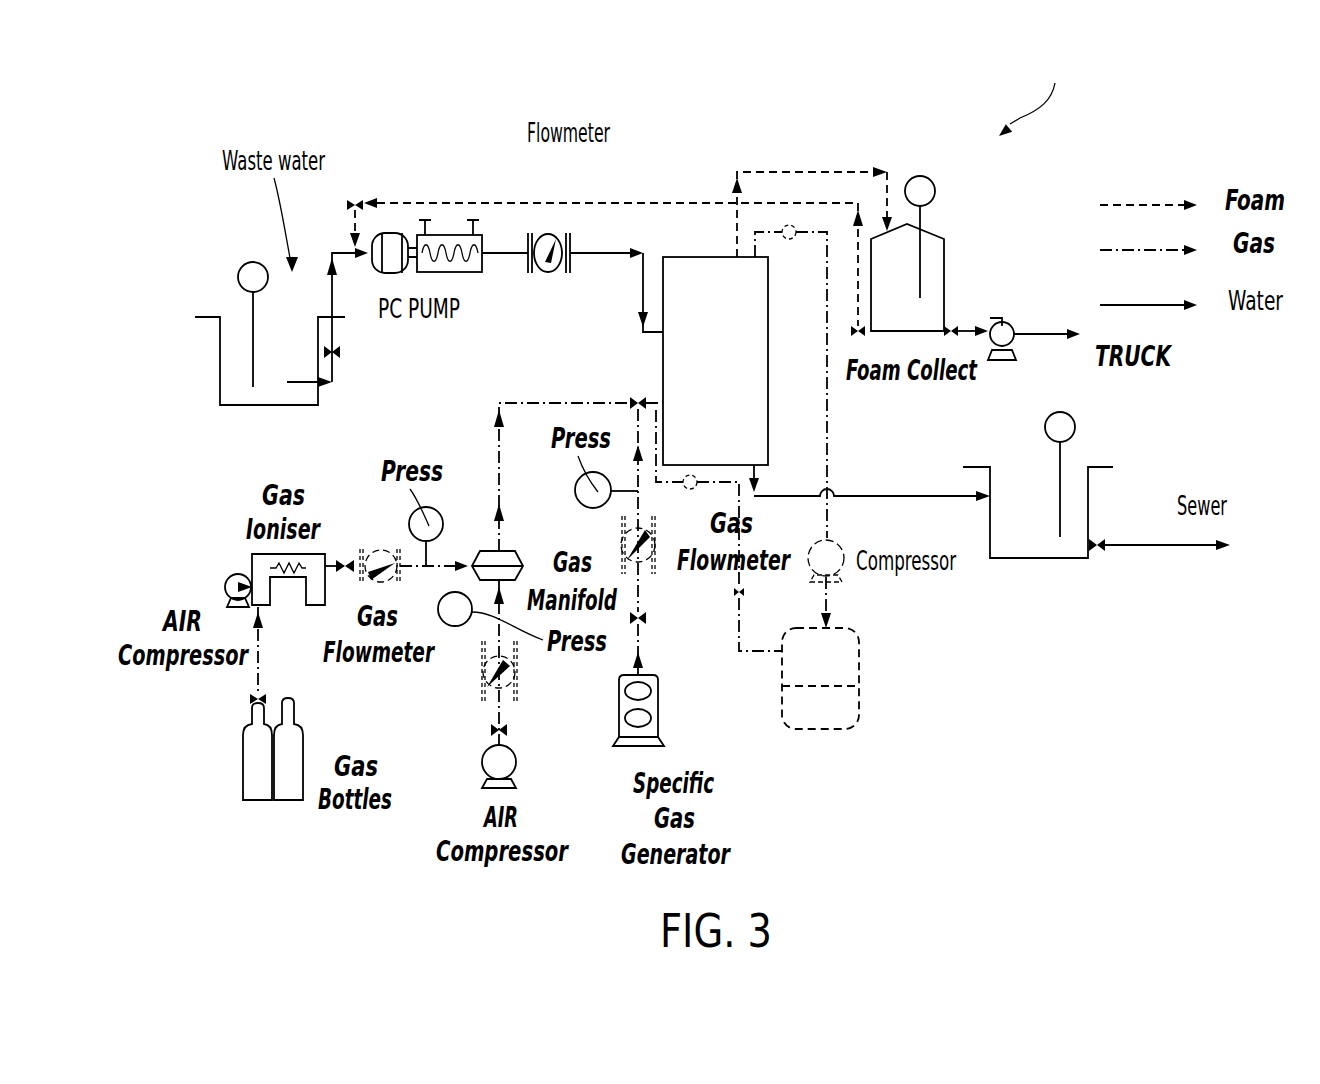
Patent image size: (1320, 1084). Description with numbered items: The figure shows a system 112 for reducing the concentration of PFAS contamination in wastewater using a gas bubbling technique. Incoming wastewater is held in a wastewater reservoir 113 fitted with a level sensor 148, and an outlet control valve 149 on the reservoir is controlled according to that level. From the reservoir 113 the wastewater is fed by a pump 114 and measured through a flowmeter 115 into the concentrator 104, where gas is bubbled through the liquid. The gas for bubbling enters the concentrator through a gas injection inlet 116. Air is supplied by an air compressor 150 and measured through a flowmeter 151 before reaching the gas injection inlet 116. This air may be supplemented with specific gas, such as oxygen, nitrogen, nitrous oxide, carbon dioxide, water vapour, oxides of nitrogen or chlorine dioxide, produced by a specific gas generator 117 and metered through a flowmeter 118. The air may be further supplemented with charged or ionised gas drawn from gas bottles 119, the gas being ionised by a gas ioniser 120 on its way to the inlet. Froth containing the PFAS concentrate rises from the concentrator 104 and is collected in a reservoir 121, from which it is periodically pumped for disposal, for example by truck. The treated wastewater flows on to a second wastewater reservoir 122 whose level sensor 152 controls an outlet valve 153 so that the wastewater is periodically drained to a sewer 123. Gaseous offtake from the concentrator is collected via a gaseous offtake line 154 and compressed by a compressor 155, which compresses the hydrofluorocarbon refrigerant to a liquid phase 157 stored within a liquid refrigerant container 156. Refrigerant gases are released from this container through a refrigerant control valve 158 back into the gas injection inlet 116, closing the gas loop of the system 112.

The system 112 is at (1035, 93).
The wastewater reservoir 113 is at (238, 406).
The level sensor 148 is at (238, 281).
The outlet control valve 149 is at (341, 352).
The pump 114 is at (468, 273).
The flowmeter 115 is at (549, 234).
The gas injection inlet 116 is at (658, 400).
The concentrator 104 is at (770, 427).
The reservoir 121 is at (945, 266).
The gaseous offtake line 154 is at (832, 395).
The compressor 155 is at (842, 545).
The liquid refrigerant container 156 is at (861, 665).
The liquid phase 157 is at (857, 713).
The refrigerant control valve 158 is at (730, 594).
The specific gas generator 117 is at (659, 706).
The flowmeter 118 is at (615, 539).
The air compressor 150 is at (517, 763).
The flowmeter 151 is at (518, 678).
The gas ioniser 120 is at (320, 553).
The gas bottles 119 is at (243, 778).
The level sensor 152 is at (1076, 426).
The wastewater reservoir 122 is at (1008, 559).
The outlet valve 153 is at (1094, 555).
The sewer 123 is at (1197, 549).